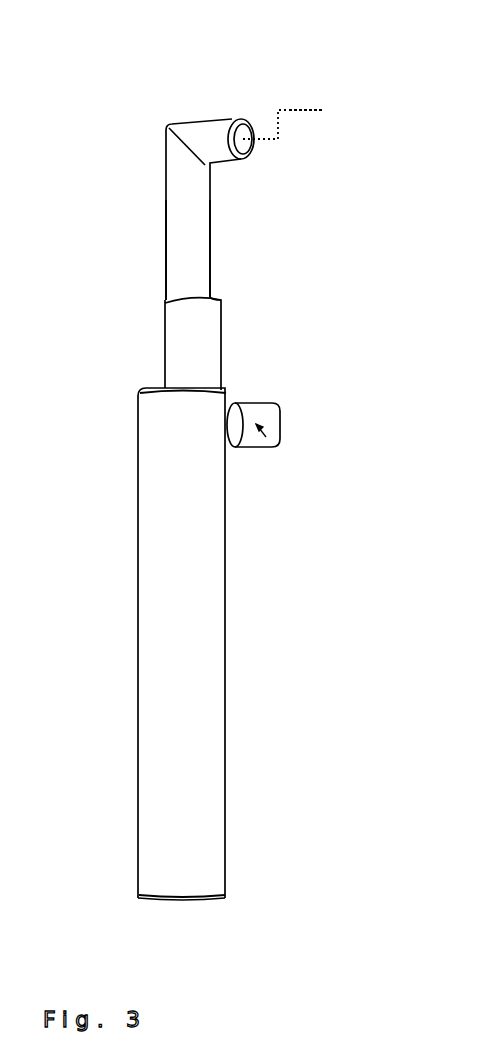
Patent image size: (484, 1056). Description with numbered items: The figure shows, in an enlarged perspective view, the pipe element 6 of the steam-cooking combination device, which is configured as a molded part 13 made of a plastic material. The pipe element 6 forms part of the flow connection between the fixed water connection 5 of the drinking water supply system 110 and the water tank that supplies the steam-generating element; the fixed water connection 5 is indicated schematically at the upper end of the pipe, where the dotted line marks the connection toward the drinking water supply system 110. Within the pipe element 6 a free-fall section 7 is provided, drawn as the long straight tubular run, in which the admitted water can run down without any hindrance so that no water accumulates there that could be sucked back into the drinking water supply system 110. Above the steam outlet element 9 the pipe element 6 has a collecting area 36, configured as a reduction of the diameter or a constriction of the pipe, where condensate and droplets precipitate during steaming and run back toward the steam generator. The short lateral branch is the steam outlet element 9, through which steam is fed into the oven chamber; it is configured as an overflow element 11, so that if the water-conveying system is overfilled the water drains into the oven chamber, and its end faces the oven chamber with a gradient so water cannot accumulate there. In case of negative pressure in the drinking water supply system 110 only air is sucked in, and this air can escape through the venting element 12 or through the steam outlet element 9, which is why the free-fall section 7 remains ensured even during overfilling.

The pipe element 6 is at (163, 138).
The free-fall section 7 is at (193, 208).
The collecting area 36 is at (205, 300).
The molded part 13 is at (187, 553).
The steam outlet element 9 is at (275, 443).
The overflow element 11 is at (266, 437).
The venting element 12 is at (266, 437).
The fixed water connection 5 is at (281, 122).
The drinking water supply system 110 is at (322, 110).